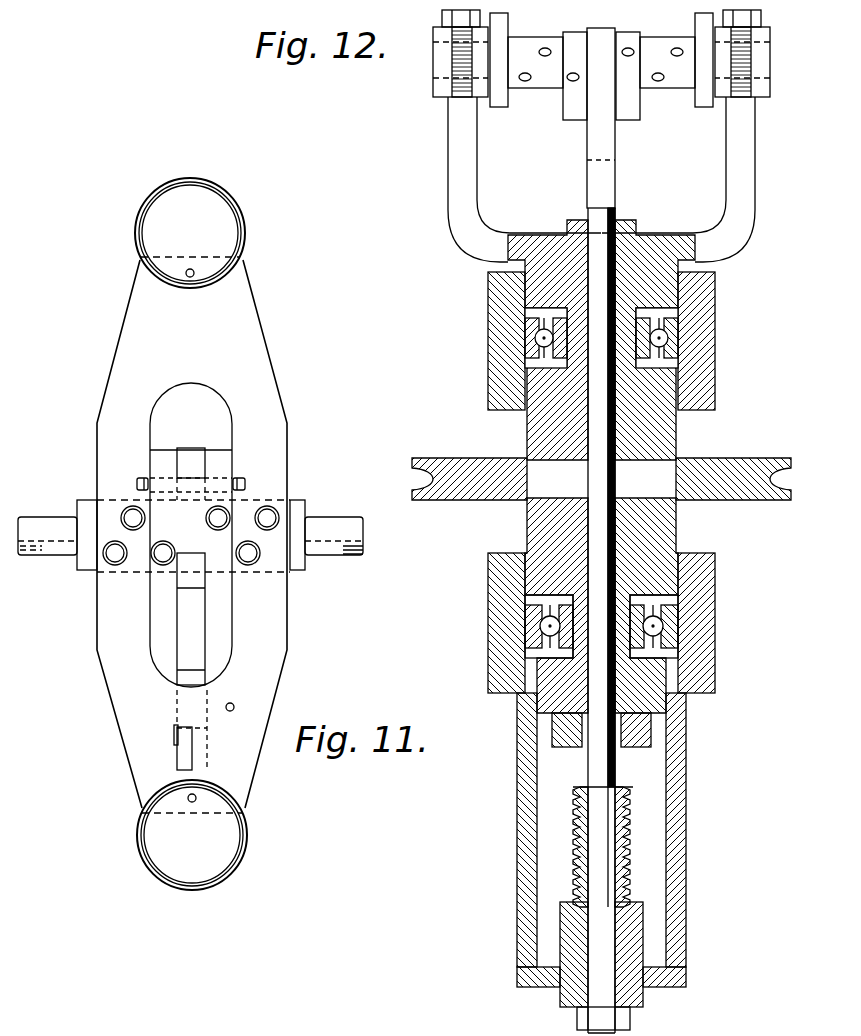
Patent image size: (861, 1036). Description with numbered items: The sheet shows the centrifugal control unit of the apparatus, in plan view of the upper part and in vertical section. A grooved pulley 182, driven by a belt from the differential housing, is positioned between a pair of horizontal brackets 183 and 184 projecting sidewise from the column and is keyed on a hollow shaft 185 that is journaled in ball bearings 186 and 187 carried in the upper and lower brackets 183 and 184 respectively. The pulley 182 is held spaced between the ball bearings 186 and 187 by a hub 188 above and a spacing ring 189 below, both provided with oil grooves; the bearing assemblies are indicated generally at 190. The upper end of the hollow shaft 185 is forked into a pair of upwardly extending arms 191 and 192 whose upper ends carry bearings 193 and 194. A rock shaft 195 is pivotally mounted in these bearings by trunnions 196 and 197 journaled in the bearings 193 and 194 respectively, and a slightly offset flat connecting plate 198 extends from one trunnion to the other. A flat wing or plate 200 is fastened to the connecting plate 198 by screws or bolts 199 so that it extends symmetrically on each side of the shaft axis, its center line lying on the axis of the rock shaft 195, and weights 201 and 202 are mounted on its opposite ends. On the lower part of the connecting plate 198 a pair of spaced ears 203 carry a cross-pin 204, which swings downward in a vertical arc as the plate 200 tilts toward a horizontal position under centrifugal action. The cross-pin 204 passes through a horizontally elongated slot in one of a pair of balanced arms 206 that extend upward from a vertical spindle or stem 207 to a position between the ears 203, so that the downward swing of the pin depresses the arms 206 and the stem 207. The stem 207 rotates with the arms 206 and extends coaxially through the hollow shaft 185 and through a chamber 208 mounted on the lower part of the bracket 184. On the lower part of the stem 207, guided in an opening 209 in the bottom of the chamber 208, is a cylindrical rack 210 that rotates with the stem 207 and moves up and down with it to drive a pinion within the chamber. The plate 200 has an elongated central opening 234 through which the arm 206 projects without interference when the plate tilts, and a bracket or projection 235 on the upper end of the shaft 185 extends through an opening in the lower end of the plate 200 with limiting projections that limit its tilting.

In FIG. 12, the grooved pulley 182 is at (776, 498).
In FIG. 12, the upper horizontal bracket 183 is at (490, 345).
In FIG. 12, the lower horizontal bracket 184 is at (495, 660).
In FIG. 12, the hollow shaft 185 is at (575, 432).
In FIG. 12, the upper ball bearing 186 is at (670, 338).
In FIG. 12, the lower ball bearing 187 is at (678, 627).
In FIG. 12, the hub 188 is at (668, 432).
In FIG. 12, the spacing ring 189 is at (532, 528).
In FIG. 12, the ball bearings 190 is at (676, 394).
In FIG. 12, the upwardly extending arm 191 is at (455, 187).
In FIG. 12, the upwardly extending arm 192 is at (742, 203).
In FIG. 12, the bearing 193 is at (440, 88).
In FIG. 12, the bearing 194 is at (725, 87).
In FIG. 12, the rock shaft 195 is at (513, 114).
In FIG. 11, the rock shaft 195 is at (87, 566).
In FIG. 12, the trunnion 196 is at (433, 64).
In FIG. 11, the trunnion 196 is at (43, 526).
In FIG. 12, the trunnion 197 is at (772, 80).
In FIG. 11, the trunnion 197 is at (335, 520).
In FIG. 12, the connecting plate 198 is at (670, 96).
In FIG. 11, the screws or bolts 199 is at (215, 518).
In FIG. 11, the flat wing or plate 200 is at (192, 534).
In FIG. 11, the weight 201 is at (192, 835).
In FIG. 11, the weight 202 is at (156, 205).
In FIG. 12, the spaced ears 203 is at (574, 118).
In FIG. 11, the spaced ears 203 is at (215, 457).
In FIG. 11, the cross-pin 204 is at (240, 480).
In FIG. 12, the balanced arms 206 is at (596, 140).
In FIG. 11, the balanced arms 206 is at (180, 466).
In FIG. 12, the vertical spindle or stem 207 is at (618, 213).
In FIG. 12, the chamber 208 is at (522, 874).
In FIG. 12, the opening 209 is at (638, 950).
In FIG. 12, the cylindrical rack 210 is at (633, 815).
In FIG. 11, the elongated central opening 234 is at (228, 653).
In FIG. 11, the bracket or projection 235 is at (180, 758).